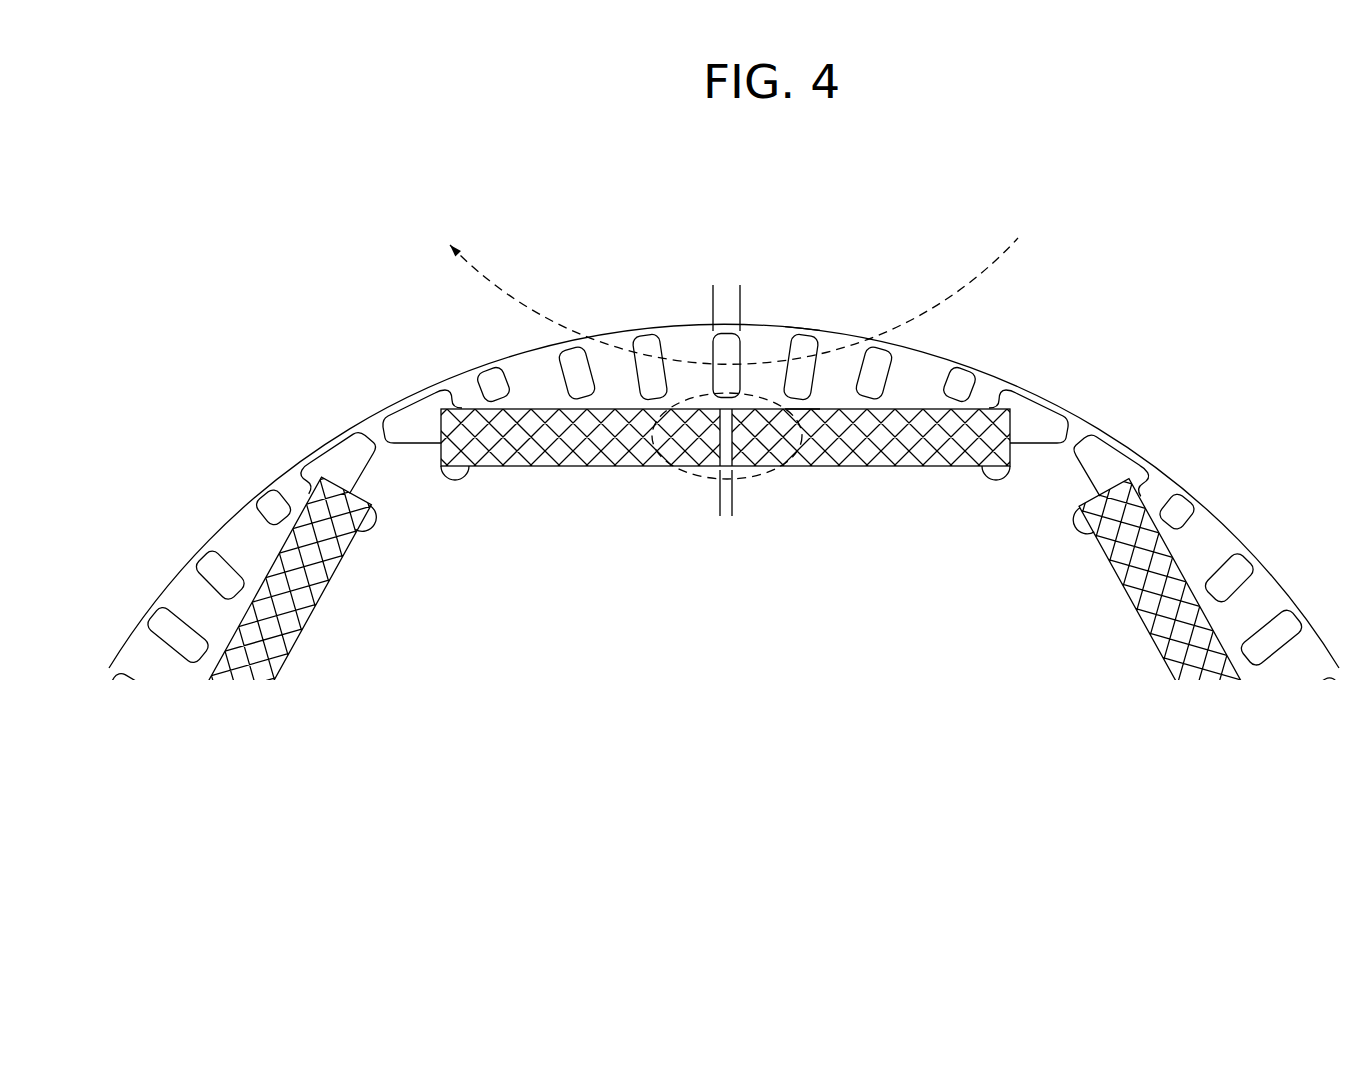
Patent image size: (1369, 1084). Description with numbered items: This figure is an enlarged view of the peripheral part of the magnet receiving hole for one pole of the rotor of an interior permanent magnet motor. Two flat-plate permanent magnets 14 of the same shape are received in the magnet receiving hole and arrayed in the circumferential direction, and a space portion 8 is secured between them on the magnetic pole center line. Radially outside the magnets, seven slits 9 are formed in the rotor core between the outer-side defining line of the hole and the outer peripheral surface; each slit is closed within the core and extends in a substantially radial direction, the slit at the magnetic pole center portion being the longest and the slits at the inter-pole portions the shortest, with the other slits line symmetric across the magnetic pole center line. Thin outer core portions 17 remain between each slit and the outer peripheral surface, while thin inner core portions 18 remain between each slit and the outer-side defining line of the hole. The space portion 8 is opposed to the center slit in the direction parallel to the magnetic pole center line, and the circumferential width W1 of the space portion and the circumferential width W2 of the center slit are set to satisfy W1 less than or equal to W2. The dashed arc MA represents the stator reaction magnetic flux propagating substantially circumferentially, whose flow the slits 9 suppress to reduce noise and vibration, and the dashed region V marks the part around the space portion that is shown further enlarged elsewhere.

The space portion 8 is at (727, 452).
The slits 9 is at (710, 346).
The permanent magnets 14 is at (543, 412).
The thin outer core portions 17 is at (798, 330).
The thin inner core portions 18 is at (797, 412).
The stator reaction magnetic flux MA is at (482, 267).
The part V is at (795, 460).
The circumferential width of the space portion W1 is at (668, 503).
The circumferential width of the slit W2 is at (665, 293).